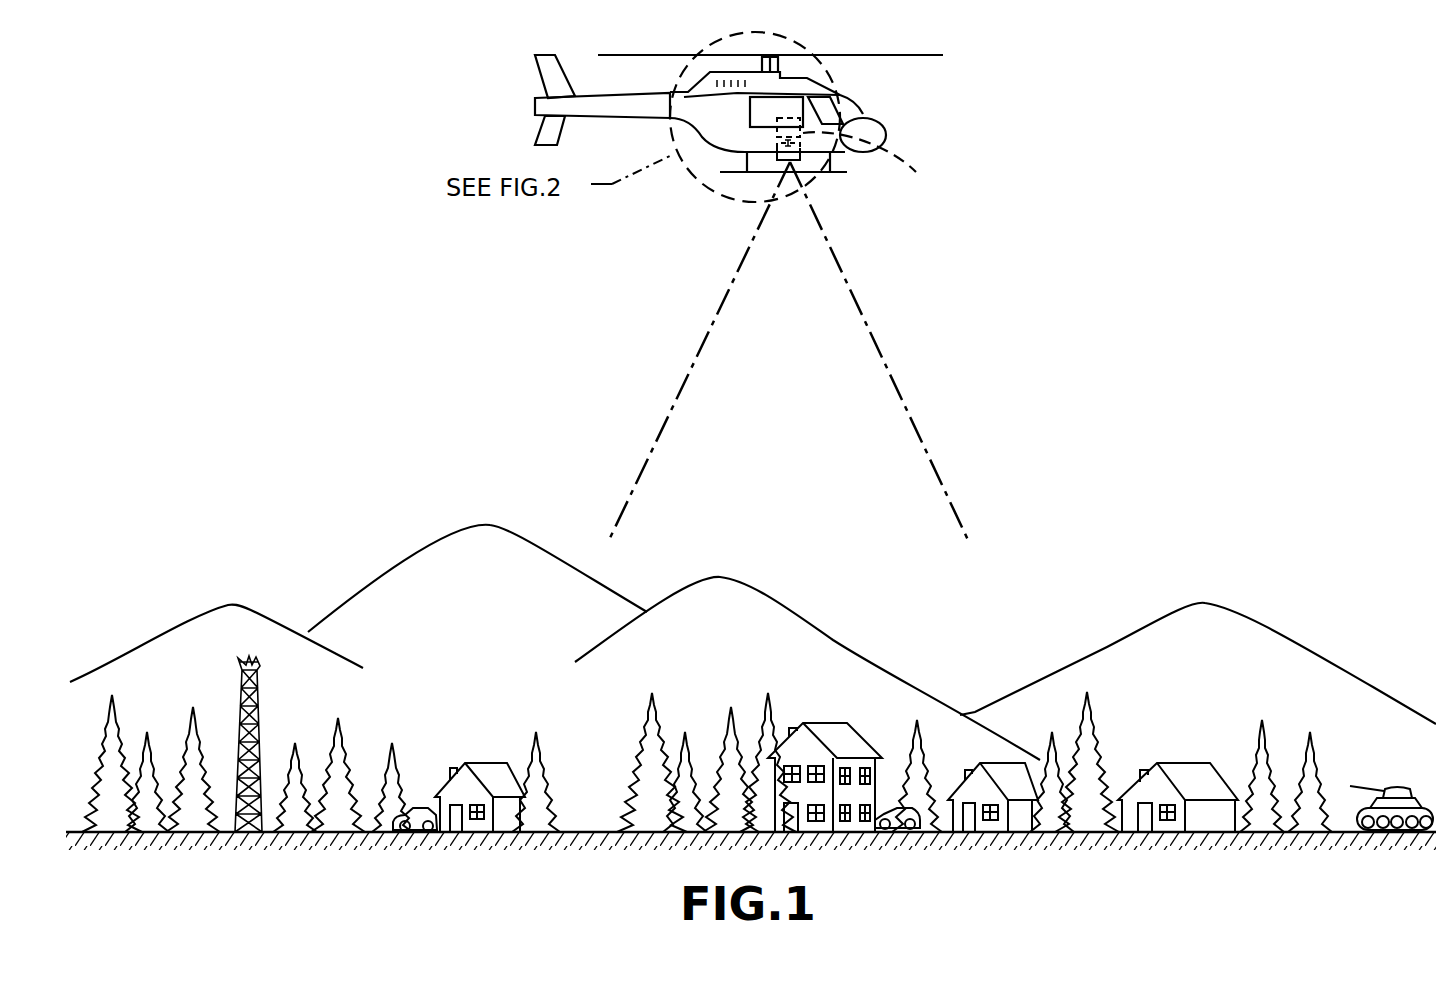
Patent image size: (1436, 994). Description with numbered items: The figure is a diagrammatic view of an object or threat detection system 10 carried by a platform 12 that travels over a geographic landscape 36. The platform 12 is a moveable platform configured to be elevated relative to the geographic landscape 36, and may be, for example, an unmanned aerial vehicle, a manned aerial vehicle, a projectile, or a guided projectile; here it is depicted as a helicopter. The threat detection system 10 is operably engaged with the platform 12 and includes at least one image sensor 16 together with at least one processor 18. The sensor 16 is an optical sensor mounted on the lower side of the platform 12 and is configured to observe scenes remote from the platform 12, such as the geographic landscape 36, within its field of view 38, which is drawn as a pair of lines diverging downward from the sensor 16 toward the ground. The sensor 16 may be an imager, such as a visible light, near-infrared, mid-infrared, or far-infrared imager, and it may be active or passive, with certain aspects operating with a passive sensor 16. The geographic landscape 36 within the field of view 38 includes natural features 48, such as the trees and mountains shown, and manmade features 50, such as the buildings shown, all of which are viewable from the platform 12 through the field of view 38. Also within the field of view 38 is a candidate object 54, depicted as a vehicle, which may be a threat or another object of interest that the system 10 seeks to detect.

The threat detection system 10 is at (766, 166).
The platform 12 is at (872, 98).
The image sensor 16 is at (802, 160).
The processor 18 is at (916, 172).
The geographic landscape 36 is at (590, 832).
The field of view 38 is at (690, 374).
The natural features 48 is at (640, 735).
The manmade features 50 is at (487, 773).
The candidate object 54 is at (1395, 787).